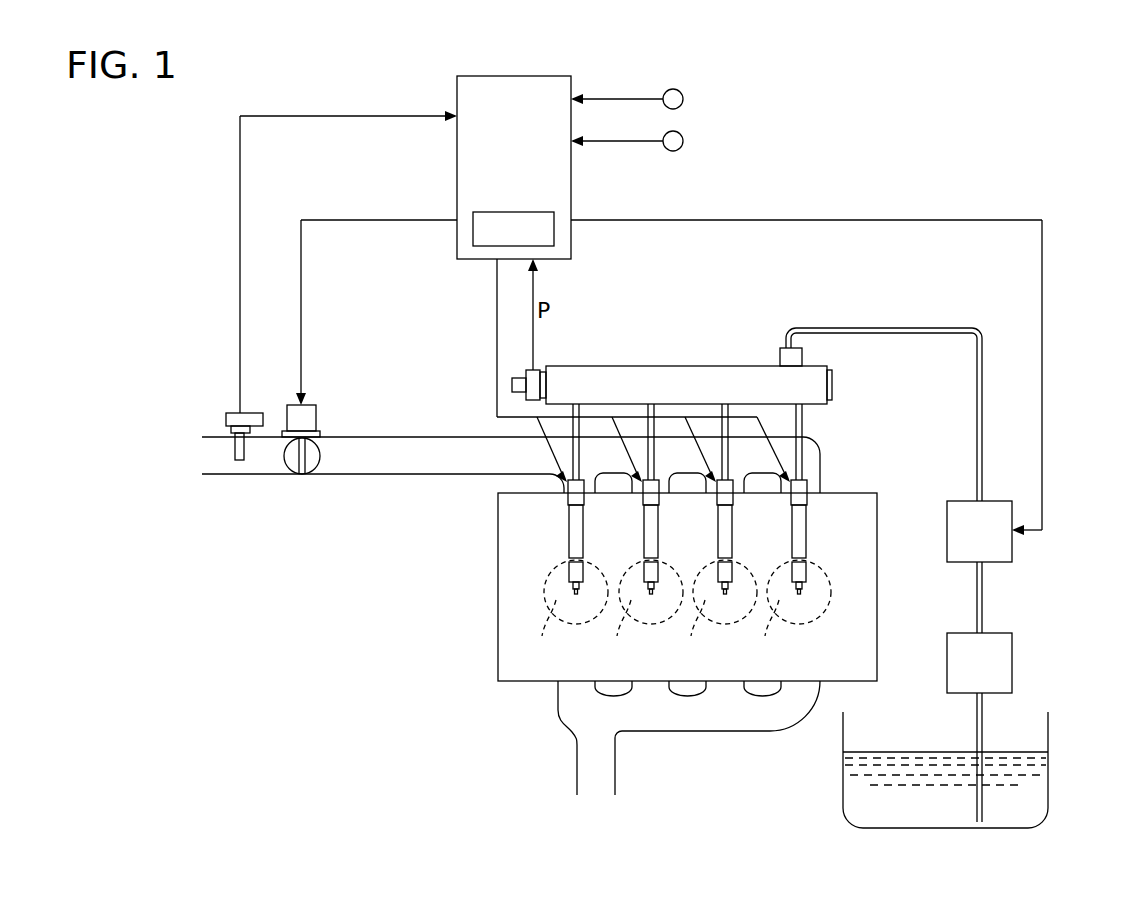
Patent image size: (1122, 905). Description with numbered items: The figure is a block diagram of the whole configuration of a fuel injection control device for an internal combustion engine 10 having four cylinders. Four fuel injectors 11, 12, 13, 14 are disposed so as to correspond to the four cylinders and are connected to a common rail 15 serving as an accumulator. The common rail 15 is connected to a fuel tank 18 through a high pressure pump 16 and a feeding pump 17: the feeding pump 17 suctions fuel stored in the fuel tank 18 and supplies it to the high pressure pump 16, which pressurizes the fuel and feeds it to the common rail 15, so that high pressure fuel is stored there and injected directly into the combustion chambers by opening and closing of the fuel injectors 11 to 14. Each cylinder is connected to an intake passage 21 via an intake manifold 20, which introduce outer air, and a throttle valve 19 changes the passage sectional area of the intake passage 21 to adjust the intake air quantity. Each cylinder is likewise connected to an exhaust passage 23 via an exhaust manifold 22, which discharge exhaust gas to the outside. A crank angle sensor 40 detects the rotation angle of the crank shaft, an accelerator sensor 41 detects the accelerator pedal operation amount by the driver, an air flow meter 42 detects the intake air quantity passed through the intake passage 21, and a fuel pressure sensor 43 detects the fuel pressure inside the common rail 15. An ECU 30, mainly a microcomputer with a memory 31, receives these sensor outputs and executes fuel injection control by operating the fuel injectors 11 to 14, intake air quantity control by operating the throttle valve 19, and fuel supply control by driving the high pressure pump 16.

The internal combustion engine 10 is at (860, 493).
The fuel injector 11 is at (568, 530).
The fuel injector 12 is at (643, 530).
The fuel injector 13 is at (717, 530).
The fuel injector 14 is at (791, 530).
The common rail 15 is at (672, 366).
The high pressure pump 16 is at (947, 527).
The feeding pump 17 is at (947, 658).
The fuel tank 18 is at (1048, 766).
The throttle valve 19 is at (320, 458).
The intake manifold 20 is at (816, 446).
The intake passage 21 is at (418, 475).
The exhaust manifold 22 is at (768, 731).
The exhaust passage 23 is at (576, 763).
The electric control unit (ECU) 30 is at (520, 76).
The memory 31 is at (513, 212).
The crank angle sensor 40 is at (680, 92).
The accelerator sensor 41 is at (680, 134).
The air flow meter 42 is at (255, 413).
The fuel pressure sensor 43 is at (535, 368).